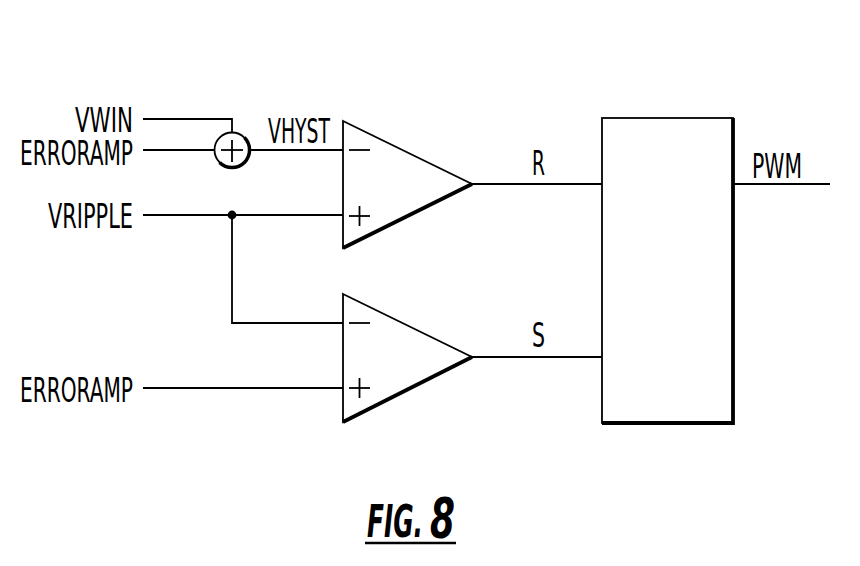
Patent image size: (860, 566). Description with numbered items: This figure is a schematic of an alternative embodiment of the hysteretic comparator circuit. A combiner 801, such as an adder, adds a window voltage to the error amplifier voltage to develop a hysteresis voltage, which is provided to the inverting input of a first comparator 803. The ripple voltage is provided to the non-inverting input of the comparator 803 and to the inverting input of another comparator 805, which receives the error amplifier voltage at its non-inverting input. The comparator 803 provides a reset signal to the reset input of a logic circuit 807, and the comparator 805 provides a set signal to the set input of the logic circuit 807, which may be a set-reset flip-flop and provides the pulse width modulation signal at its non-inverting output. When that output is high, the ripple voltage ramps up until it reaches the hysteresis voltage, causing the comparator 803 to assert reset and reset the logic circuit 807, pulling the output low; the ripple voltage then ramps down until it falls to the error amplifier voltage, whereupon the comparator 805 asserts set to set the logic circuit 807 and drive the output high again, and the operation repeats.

The combiner 801 is at (238, 134).
The first comparator 803 is at (392, 142).
The comparator 805 is at (392, 315).
The logic circuit 807 is at (653, 118).